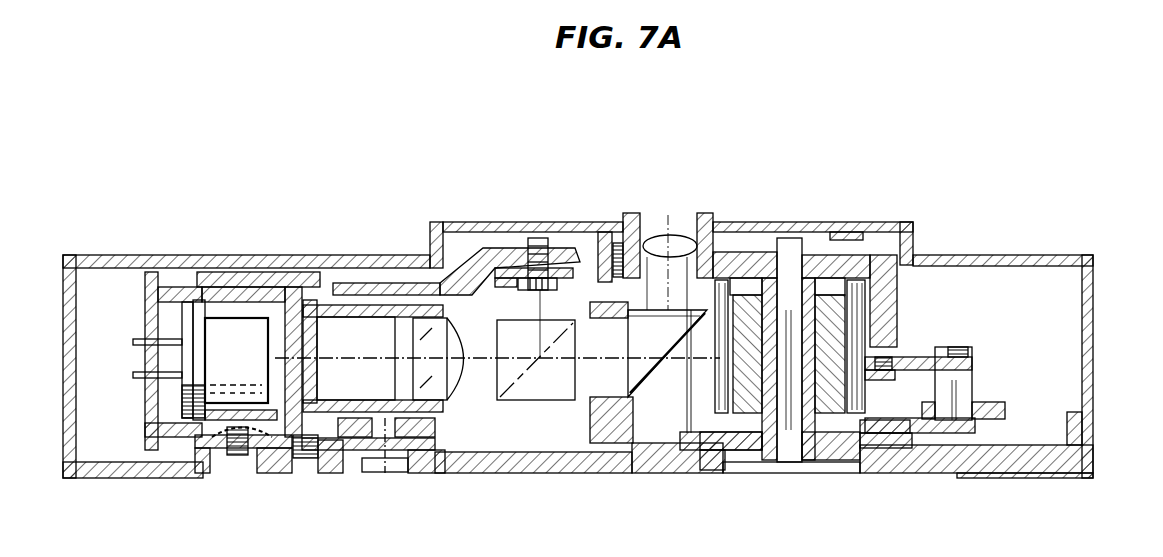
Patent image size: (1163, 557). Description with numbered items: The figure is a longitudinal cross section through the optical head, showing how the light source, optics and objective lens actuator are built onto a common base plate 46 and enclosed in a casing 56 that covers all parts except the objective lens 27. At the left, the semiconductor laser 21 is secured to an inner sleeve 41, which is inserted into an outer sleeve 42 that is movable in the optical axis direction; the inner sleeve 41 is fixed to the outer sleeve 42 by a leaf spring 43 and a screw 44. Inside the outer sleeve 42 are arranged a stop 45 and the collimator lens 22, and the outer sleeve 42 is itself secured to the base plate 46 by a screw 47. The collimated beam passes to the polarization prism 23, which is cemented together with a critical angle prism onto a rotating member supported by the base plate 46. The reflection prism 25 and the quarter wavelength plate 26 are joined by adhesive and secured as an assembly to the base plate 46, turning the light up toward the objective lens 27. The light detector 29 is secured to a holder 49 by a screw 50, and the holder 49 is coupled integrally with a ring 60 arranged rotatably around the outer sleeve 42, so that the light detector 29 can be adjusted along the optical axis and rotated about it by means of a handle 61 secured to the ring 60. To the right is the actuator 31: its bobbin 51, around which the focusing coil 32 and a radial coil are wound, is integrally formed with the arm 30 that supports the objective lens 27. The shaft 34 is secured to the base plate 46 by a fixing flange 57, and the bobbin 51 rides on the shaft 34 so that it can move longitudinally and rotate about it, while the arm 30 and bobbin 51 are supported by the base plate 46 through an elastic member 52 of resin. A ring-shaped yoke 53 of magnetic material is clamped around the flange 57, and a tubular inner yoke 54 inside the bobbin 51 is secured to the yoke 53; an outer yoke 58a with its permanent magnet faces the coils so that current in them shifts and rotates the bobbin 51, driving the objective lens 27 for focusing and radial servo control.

The semiconductor laser 21 is at (228, 327).
The inner sleeve 41 is at (248, 298).
The outer sleeve 42 is at (312, 283).
The ring 60 is at (358, 287).
The collimator lens 22 is at (418, 323).
The polarization prism 23 is at (498, 322).
The holder 49 is at (512, 268).
The screw 50 is at (545, 240).
The light detector 29 is at (602, 262).
The quarter wavelength plate 26 is at (648, 310).
The objective lens 27 is at (692, 285).
The outer yoke 58a is at (712, 250).
The arm 30 is at (730, 252).
The shaft 34 is at (800, 248).
The actuator 31 is at (874, 248).
The focusing coil 32 is at (868, 290).
The elastic member 52 is at (902, 357).
The casing 56 is at (1090, 278).
The stop 45 is at (312, 328).
The leaf spring 43 is at (222, 448).
The screw 44 is at (237, 456).
The screw 47 is at (310, 460).
The handle 61 is at (410, 473).
The base plate 46 is at (518, 467).
The reflection prism 25 is at (642, 380).
The yoke 53 is at (702, 447).
The inner yoke 54 is at (742, 428).
The fixing flange 57 is at (840, 460).
The bobbin 51 is at (865, 440).